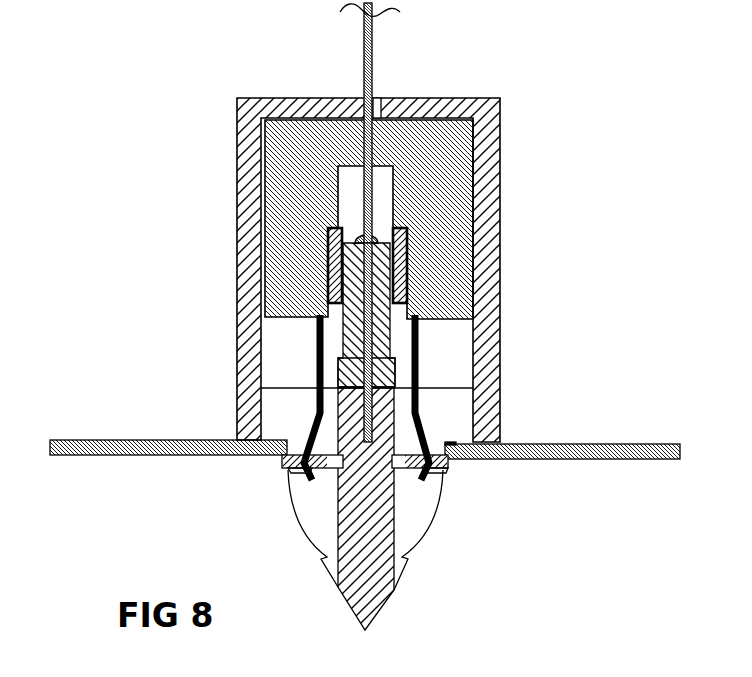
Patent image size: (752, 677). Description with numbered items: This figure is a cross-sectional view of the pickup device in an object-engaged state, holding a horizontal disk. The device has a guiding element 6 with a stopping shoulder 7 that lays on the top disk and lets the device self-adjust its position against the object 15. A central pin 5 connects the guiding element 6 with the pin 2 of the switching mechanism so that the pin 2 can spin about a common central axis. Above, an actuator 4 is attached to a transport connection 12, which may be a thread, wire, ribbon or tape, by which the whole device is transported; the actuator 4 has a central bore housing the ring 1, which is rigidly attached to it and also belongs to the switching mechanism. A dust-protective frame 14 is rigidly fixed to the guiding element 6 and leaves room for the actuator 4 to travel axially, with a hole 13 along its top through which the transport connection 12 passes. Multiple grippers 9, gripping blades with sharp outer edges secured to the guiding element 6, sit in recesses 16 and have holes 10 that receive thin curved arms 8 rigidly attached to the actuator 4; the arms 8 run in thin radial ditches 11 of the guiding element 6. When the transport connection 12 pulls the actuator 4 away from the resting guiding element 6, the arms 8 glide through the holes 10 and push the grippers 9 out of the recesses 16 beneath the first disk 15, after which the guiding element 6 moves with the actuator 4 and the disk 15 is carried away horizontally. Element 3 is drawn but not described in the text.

The ring 1 is at (343, 280).
The pin 2 is at (345, 355).
The guide bushings 3 is at (328, 253).
The actuator 4 is at (285, 200).
The central pin 5 is at (343, 313).
The guiding element 6 is at (367, 573).
The stopping shoulder 7 is at (462, 442).
The curved arms 8 is at (308, 433).
The grippers 9 is at (285, 457).
The holes 10 is at (298, 467).
The radial ditches 11 is at (300, 403).
The transport connection 12 is at (364, 68).
The hole 13 is at (380, 98).
The dust-protective frame 14 is at (247, 142).
The object 15 is at (555, 452).
The recesses 16 is at (397, 462).